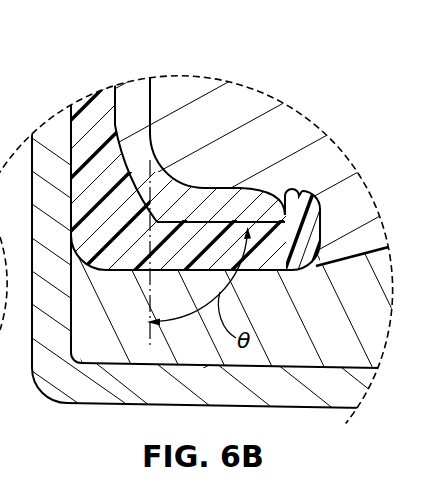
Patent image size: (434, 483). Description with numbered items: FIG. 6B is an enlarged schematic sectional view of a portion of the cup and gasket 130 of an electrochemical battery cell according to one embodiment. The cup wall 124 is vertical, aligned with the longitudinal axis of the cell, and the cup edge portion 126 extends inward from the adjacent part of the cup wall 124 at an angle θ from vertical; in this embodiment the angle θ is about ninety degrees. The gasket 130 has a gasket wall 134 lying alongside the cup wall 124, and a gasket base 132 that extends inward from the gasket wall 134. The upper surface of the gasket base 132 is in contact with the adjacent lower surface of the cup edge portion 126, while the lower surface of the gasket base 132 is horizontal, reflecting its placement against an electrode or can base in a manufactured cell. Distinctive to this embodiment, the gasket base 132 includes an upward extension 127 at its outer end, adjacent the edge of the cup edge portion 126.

The cup wall 124 is at (152, 113).
The cup edge portion 126 is at (264, 194).
The upward extension 127 is at (300, 191).
The gasket 130 is at (95, 64).
The gasket base 132 is at (255, 198).
The gasket wall 134 is at (72, 158).